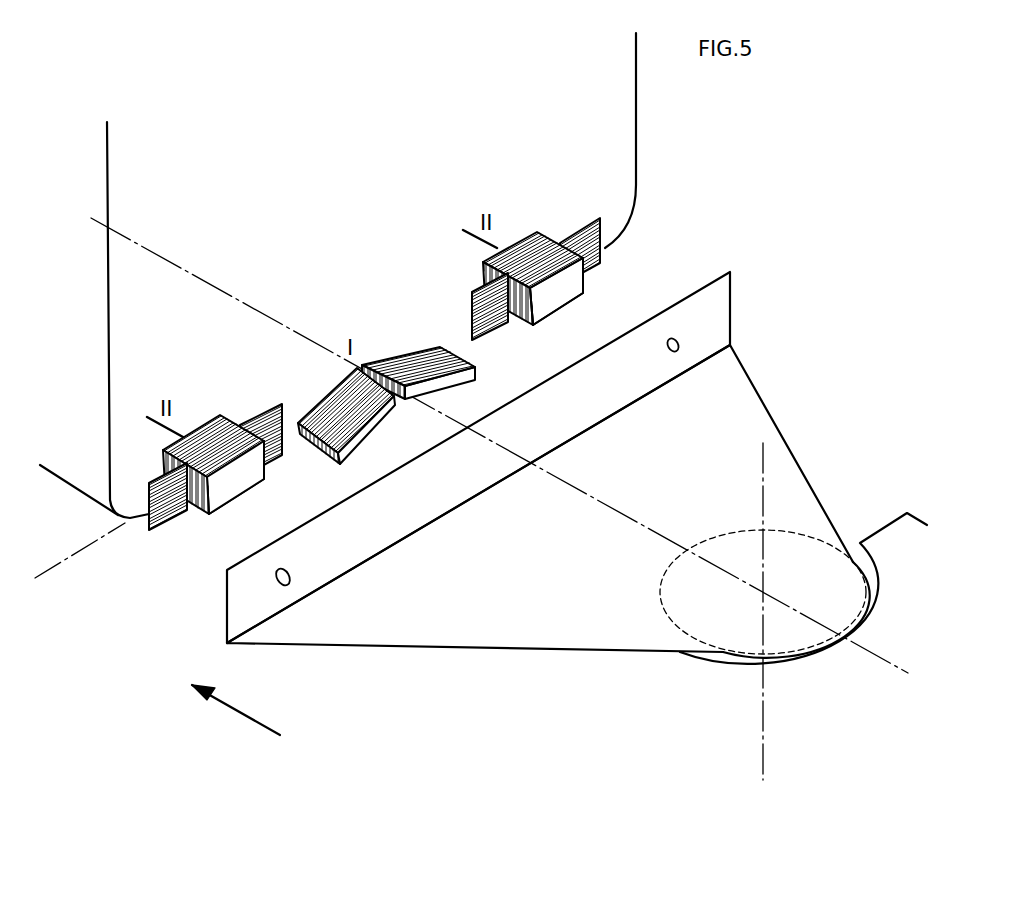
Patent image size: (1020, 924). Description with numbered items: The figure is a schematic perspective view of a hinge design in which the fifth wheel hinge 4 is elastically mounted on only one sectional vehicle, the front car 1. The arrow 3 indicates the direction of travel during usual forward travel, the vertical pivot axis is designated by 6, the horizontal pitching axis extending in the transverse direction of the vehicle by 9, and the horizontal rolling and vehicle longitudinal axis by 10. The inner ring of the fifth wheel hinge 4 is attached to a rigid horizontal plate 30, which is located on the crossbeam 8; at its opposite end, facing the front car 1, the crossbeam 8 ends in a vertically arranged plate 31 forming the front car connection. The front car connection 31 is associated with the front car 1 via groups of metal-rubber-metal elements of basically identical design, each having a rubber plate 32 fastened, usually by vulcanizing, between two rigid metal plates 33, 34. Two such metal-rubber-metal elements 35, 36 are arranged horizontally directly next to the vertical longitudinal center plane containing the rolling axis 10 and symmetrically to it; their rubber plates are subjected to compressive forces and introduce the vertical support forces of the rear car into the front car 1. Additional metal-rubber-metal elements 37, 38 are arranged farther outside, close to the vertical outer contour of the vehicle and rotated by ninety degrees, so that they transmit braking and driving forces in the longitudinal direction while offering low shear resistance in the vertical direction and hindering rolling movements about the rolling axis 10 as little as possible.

The front car 1 is at (355, 147).
The arrow 3 is at (242, 717).
The fifth wheel hinge 4 is at (817, 453).
The vertical pivot axis 6 is at (763, 702).
The crossbeam 8 is at (712, 457).
The horizontal pitching axis 9 is at (73, 557).
The rolling and vehicle longitudinal axis 10 is at (602, 504).
The rigid horizontal plate 30 is at (698, 617).
The front car connection 31 is at (712, 305).
The rubber plate 32 is at (492, 257).
The rigid plate 33 is at (563, 297).
The rigid plate 34 is at (522, 255).
The metal-rubber-metal element 35 is at (313, 408).
The metal-rubber-metal element 36 is at (382, 345).
The metal-rubber-metal element 37 is at (198, 418).
The metal-rubber-metal element 38 is at (537, 218).